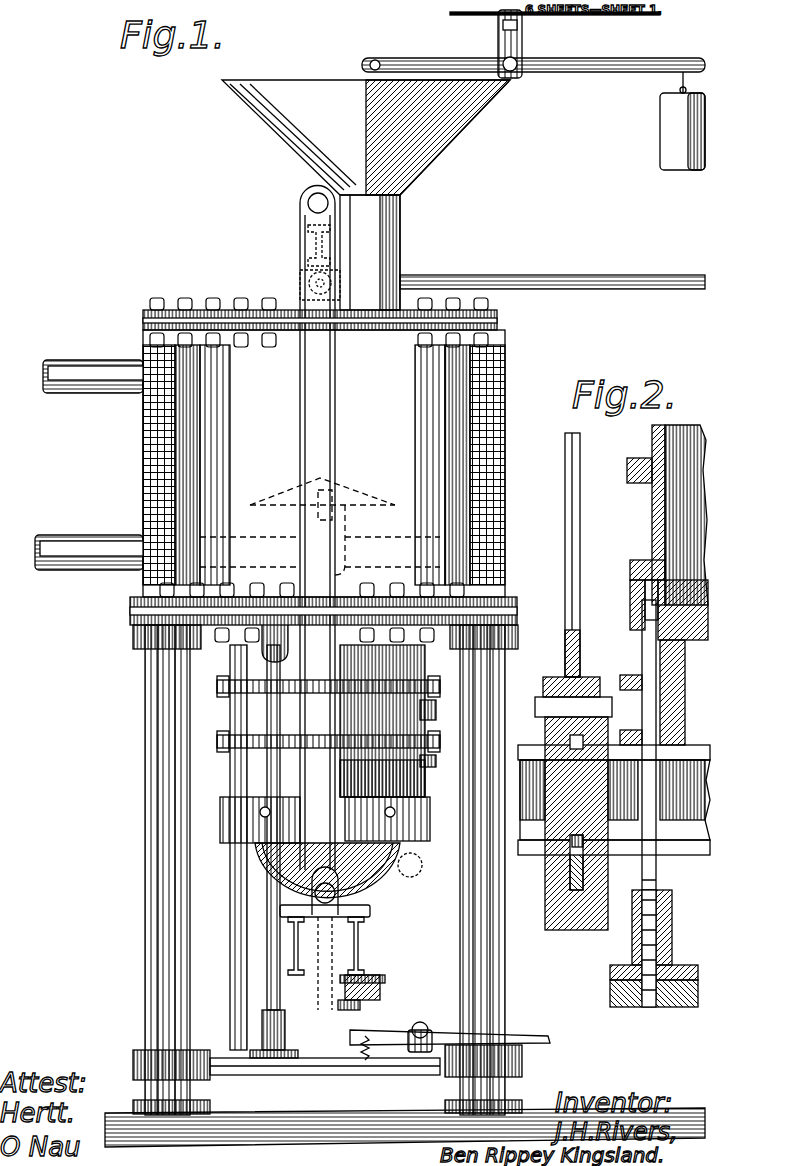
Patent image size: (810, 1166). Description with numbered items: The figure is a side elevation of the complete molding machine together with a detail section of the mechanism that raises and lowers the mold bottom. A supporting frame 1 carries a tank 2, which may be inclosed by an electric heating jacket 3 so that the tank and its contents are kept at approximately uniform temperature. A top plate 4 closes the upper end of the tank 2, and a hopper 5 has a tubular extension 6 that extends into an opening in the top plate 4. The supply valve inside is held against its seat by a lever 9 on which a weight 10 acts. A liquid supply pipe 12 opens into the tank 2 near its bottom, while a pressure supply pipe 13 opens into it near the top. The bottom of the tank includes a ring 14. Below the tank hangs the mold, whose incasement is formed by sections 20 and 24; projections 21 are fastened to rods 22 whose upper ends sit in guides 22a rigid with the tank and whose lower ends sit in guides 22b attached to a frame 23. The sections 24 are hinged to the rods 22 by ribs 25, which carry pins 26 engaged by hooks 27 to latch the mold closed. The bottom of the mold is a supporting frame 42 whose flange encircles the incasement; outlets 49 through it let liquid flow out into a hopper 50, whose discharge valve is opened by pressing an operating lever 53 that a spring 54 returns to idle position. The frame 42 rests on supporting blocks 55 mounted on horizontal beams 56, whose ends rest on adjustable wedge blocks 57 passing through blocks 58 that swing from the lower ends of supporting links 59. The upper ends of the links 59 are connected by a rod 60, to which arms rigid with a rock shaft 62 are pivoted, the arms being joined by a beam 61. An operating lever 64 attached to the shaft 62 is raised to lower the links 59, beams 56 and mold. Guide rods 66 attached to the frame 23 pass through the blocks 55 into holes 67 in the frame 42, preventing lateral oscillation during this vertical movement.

In FIG. 1, the supporting frame 1 is at (150, 818).
In FIG. 1, the container or tank 2 is at (320, 517).
In FIG. 1, the electric heating jacket 3 is at (480, 378).
In FIG. 1, the top plate 4 is at (210, 320).
In FIG. 1, the hopper 5 is at (438, 140).
In FIG. 1, the tubular extension 6 is at (400, 248).
In FIG. 1, the lever 9 is at (600, 60).
In FIG. 1, the weight or actuating device 10 is at (665, 128).
In FIG. 1, the liquid supply pipe 12 is at (85, 566).
In FIG. 1, the pressure supply pipe 13 is at (105, 388).
In FIG. 1, the ring or frame piece 14 is at (517, 610).
In FIG. 1, the incasement section 20 is at (238, 772).
In FIG. 2, the incasement section 20 is at (652, 434).
In FIG. 1, the projections 21 is at (225, 696).
In FIG. 2, the projections 21 is at (627, 470).
In FIG. 1, the rods 22 is at (266, 888).
In FIG. 1, the guides 22a is at (275, 645).
In FIG. 1, the guides 22b is at (338, 1005).
In FIG. 1, the frame 23 is at (250, 1075).
In FIG. 2, the frame 23 is at (612, 993).
In FIG. 1, the incasement sections 24 is at (391, 717).
In FIG. 1, the ribs or flanges 25 is at (415, 770).
In FIG. 1, the pins 26 is at (436, 708).
In FIG. 1, the hooks 27 is at (440, 740).
In FIG. 1, the supporting frame 42 is at (240, 843).
In FIG. 2, the supporting frame 42 is at (638, 560).
In FIG. 1, the outlets 49 is at (430, 808).
In FIG. 1, the hopper 50 is at (385, 870).
In FIG. 2, the hopper 50 is at (680, 655).
In FIG. 1, the operating lever 53 is at (530, 1036).
In FIG. 1, the spring 54 is at (366, 1062).
In FIG. 1, the supporting blocks 55 is at (280, 908).
In FIG. 2, the supporting blocks 55 is at (685, 708).
In FIG. 1, the horizontal beams 56 is at (290, 957).
In FIG. 2, the horizontal beams 56 is at (615, 800).
In FIG. 1, the adjustable wedge blocks 57 is at (378, 992).
In FIG. 2, the adjustable wedge blocks 57 is at (570, 860).
In FIG. 1, the blocks 58 is at (290, 1020).
In FIG. 2, the blocks 58 is at (575, 925).
In FIG. 1, the supporting links 59 is at (317, 528).
In FIG. 2, the supporting links 59 is at (565, 520).
In FIG. 1, the rod 60 is at (307, 204).
In FIG. 1, the beam 61 is at (306, 246).
In FIG. 1, the rock shaft 62 is at (307, 285).
In FIG. 1, the operating lever 64 is at (608, 275).
In FIG. 1, the guide rods 66 is at (410, 865).
In FIG. 2, the guide rods 66 is at (642, 657).
In FIG. 2, the holes 67 is at (630, 605).